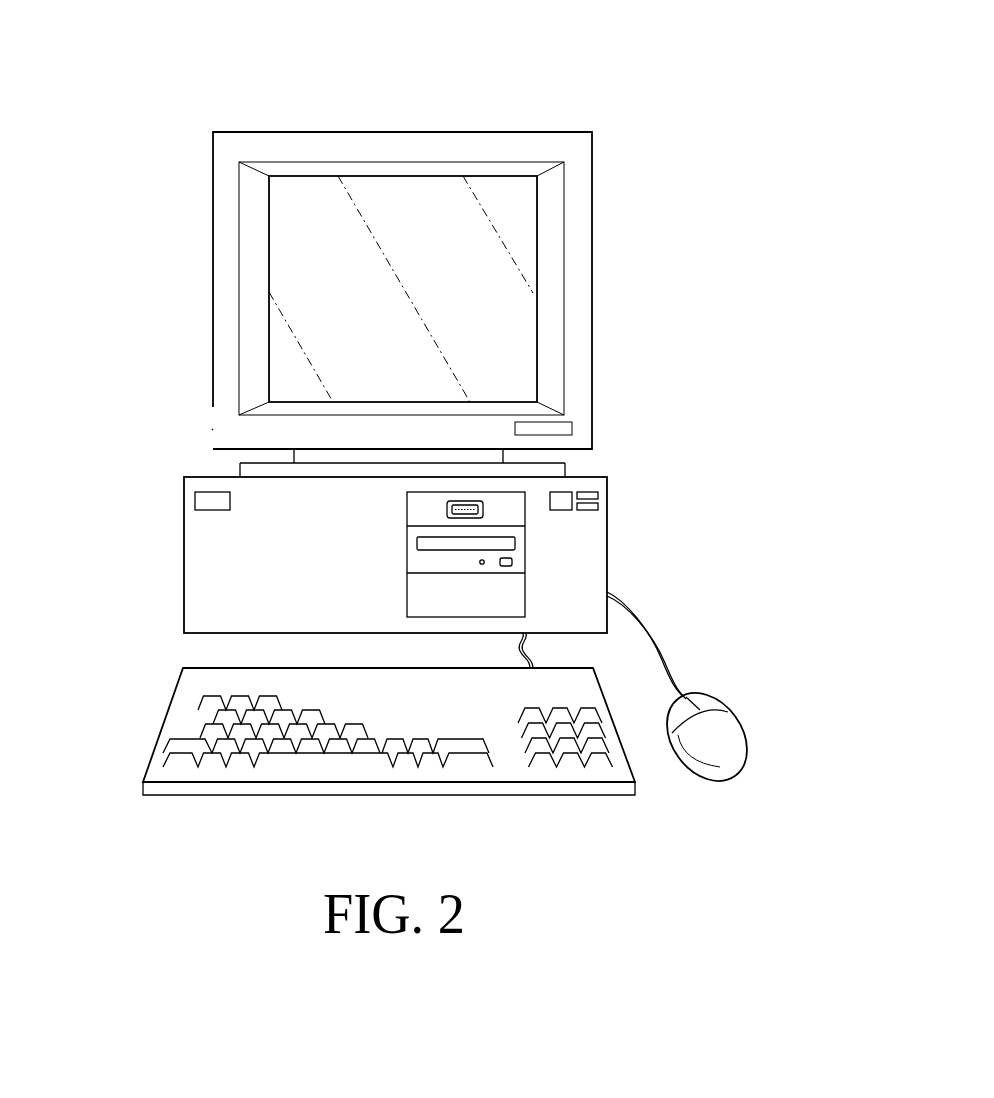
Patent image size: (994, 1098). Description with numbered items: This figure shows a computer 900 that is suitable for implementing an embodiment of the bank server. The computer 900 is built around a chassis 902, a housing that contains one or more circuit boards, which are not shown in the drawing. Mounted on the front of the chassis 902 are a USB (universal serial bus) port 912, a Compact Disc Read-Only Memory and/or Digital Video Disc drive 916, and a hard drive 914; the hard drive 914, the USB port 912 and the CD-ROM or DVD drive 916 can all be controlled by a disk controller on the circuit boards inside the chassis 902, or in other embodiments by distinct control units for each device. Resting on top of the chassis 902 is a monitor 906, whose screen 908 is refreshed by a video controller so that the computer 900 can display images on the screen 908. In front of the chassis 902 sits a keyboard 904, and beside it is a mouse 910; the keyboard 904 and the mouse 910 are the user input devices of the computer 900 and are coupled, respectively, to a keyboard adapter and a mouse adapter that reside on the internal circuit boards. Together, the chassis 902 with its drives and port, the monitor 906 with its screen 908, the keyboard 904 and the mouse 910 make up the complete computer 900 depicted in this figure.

The computer 900 is at (588, 104).
The chassis 902 is at (184, 557).
The keyboard 904 is at (163, 720).
The monitor 906 is at (290, 131).
The screen 908 is at (320, 295).
The mouse 910 is at (727, 725).
The USB port 912 is at (485, 502).
The hard drive 914 is at (515, 592).
The CD-ROM and/or DVD drive 916 is at (515, 550).